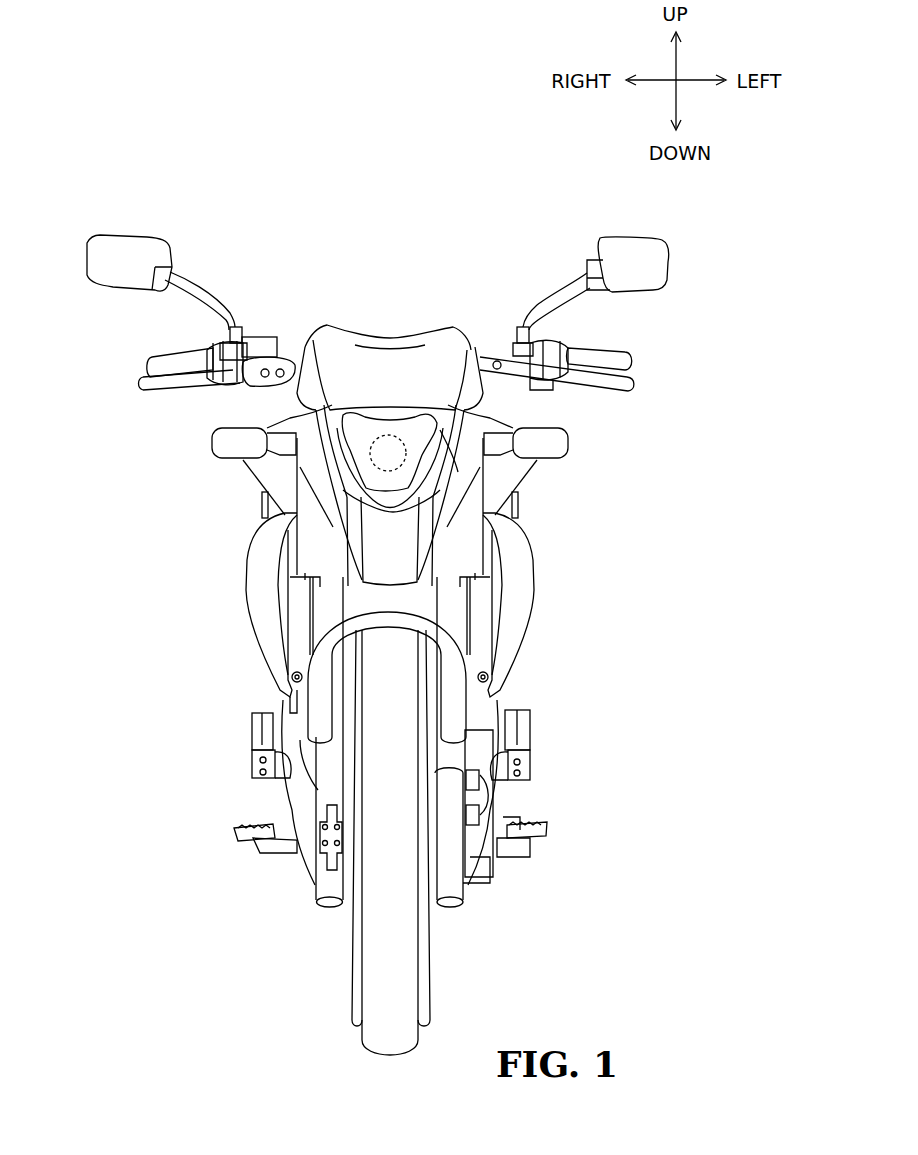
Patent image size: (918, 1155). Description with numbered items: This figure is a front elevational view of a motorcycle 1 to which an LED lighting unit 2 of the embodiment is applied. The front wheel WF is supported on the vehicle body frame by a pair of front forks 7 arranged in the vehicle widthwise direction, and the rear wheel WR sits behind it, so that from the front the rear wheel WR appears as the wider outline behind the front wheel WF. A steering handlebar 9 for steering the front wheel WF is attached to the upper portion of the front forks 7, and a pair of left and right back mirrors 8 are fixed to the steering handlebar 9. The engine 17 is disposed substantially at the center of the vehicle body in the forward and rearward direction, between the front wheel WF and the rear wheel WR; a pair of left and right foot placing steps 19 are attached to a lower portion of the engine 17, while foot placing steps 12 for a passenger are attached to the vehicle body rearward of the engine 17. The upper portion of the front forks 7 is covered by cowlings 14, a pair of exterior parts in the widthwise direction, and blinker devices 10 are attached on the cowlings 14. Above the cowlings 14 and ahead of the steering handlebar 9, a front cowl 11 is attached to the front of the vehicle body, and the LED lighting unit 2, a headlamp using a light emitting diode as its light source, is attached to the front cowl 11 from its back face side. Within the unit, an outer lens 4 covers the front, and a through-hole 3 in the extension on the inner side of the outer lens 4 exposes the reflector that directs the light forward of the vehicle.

The motorcycle 1 is at (270, 208).
The LED lighting unit 2 is at (417, 412).
The through-hole 3 is at (385, 438).
The outer lens 4 is at (332, 405).
The front forks 7 is at (330, 613).
The back mirrors 8 is at (150, 255).
The steering handlebar 9 is at (163, 368).
The blinker devices 10 is at (220, 447).
The front cowl 11 is at (398, 345).
The foot placing steps for a passenger 12 is at (250, 735).
The cowlings 14 is at (263, 617).
The engine 17 is at (502, 799).
The foot placing steps 19 is at (245, 827).
The rear wheel WR is at (352, 998).
The front wheel WF is at (407, 1045).